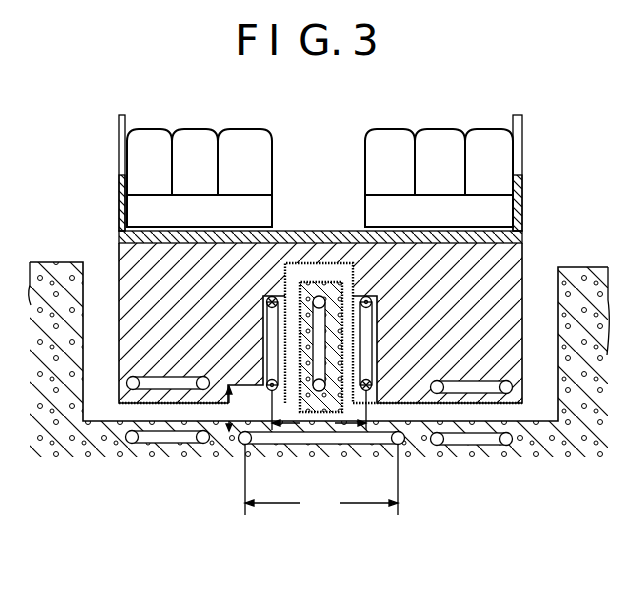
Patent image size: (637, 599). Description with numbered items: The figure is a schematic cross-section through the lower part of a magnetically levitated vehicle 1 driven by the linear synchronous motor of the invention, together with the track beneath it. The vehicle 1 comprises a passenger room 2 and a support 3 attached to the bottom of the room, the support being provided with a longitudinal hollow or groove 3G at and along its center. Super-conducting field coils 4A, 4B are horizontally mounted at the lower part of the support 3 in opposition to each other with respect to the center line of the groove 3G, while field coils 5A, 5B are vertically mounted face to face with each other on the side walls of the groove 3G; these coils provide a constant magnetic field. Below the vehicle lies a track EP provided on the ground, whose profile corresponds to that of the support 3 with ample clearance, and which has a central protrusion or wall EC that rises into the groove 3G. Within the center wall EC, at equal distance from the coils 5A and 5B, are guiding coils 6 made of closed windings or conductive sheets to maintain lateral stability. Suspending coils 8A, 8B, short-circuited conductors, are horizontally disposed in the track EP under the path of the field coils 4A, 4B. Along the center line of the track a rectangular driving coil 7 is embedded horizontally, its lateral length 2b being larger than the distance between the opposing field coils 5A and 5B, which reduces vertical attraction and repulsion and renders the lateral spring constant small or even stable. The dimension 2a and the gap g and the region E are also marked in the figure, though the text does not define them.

The magnetically levitated vehicle 1 is at (320, 170).
The passenger room 2 is at (135, 160).
The support 3 is at (123, 258).
The groove 3G is at (291, 281).
The field coil 4A is at (166, 377).
The field coil 4B is at (470, 380).
The field coil 5A is at (266, 300).
The field coil 5B is at (372, 300).
The guiding coil 6 is at (316, 337).
The driving coil 7 is at (352, 444).
The suspending coil 8A is at (163, 445).
The suspending coil 8B is at (470, 447).
The center wall EC is at (338, 285).
The track EP is at (81, 391).
The earth concrete E is at (586, 266).
The dimension 2a is at (319, 422).
The lateral length of driving coil 2b is at (321, 481).
The gap g is at (228, 408).